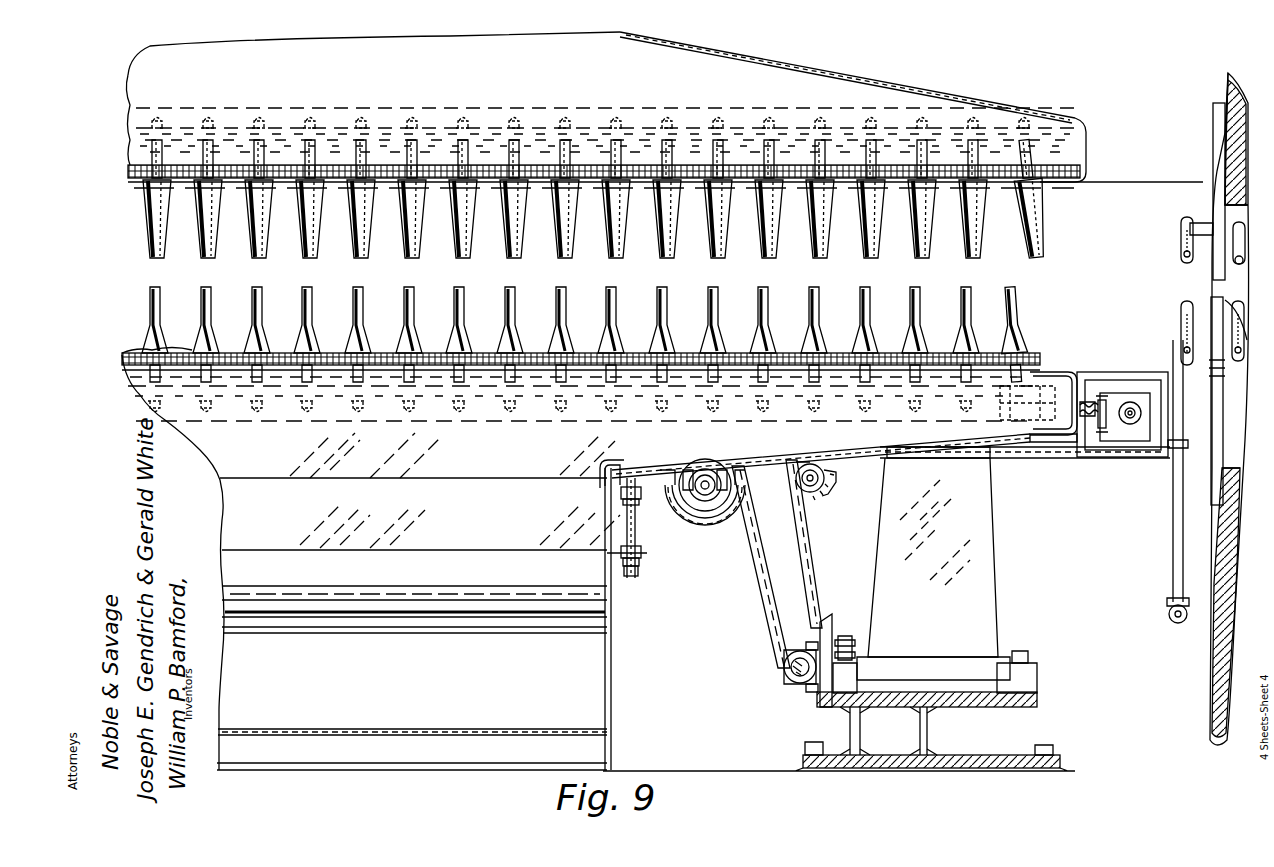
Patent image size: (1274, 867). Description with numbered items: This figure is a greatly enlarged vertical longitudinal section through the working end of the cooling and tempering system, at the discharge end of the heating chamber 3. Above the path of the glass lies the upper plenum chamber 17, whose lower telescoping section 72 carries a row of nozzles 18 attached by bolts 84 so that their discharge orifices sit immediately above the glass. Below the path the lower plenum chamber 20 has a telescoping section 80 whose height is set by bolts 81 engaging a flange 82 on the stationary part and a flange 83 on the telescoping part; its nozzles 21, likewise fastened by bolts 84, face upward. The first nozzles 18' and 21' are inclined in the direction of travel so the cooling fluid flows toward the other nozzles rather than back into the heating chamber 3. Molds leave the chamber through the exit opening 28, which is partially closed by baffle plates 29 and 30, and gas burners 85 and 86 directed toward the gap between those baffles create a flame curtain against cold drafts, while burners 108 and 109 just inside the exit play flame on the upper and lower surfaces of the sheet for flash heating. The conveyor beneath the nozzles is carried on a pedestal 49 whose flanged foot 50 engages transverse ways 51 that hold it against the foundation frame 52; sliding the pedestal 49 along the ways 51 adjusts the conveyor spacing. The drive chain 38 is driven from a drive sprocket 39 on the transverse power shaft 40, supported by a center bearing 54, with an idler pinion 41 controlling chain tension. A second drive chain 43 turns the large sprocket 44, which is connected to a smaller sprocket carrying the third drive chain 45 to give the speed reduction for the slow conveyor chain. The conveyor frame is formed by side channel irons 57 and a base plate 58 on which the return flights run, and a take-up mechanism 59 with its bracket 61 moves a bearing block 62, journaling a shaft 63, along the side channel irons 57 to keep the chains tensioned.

The heating chamber 3 is at (1214, 654).
The upper plenum chamber 17 is at (664, 107).
The nozzles 18 is at (565, 202).
The inclined nozzle 18' is at (1036, 199).
The lower plenum chamber 20 is at (607, 670).
The nozzles 21 is at (560, 334).
The inclined nozzle 21' is at (1025, 334).
The exit opening 28 is at (1225, 202).
The baffle plate 29 is at (1200, 462).
The baffle plate 30 is at (1213, 186).
The drive chain 38 is at (807, 567).
The drive sprocket 39 is at (792, 646).
The transverse power shaft 40 is at (790, 672).
The idler pinion 41 is at (821, 489).
The second drive chain 43 is at (743, 491).
The large sprocket 44 is at (718, 515).
The third drive chain 45 is at (700, 512).
The pedestal 49 is at (985, 578).
The flanged foot 50 is at (956, 680).
The transverse ways 51 is at (1023, 680).
The foundation frame 52 is at (901, 698).
The center bearing 54 is at (824, 630).
The side channel irons 57 is at (1090, 374).
The base plate 58 is at (1042, 459).
The take-up mechanism 59 is at (1096, 428).
The bracket 61 is at (1085, 427).
The bearing block 62 is at (1130, 426).
The shaft 63 is at (1130, 408).
The telescoping section 72 is at (852, 84).
The telescoping section 80 is at (606, 475).
The bolts 81 is at (638, 532).
The flange 82 is at (641, 554).
The flange 83 is at (638, 502).
The bolts 84 is at (866, 120).
The gas burner 85 is at (1180, 255).
The gas burner 86 is at (1180, 336).
The burner 108 is at (1236, 262).
The burner 109 is at (1235, 318).